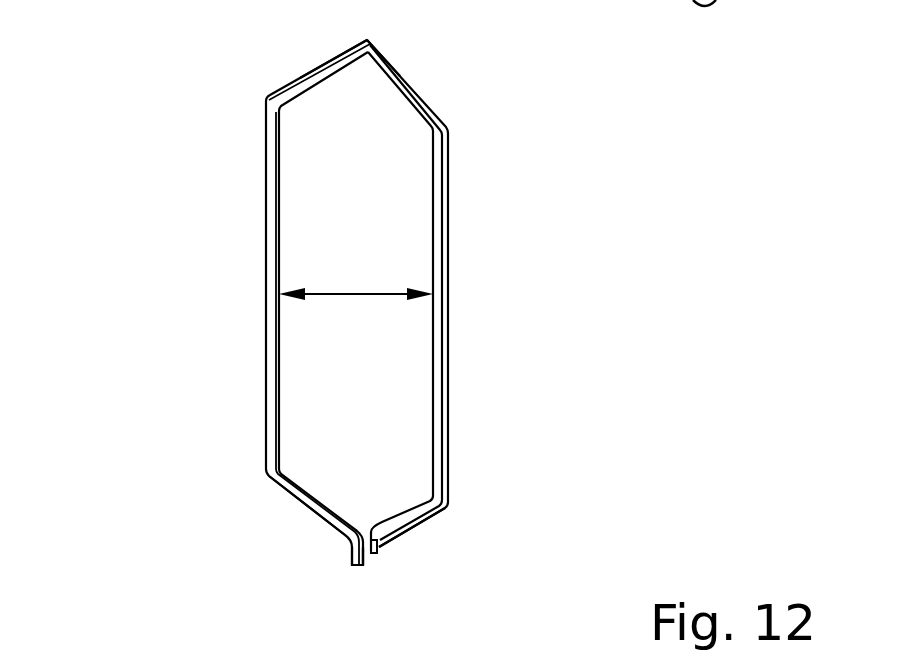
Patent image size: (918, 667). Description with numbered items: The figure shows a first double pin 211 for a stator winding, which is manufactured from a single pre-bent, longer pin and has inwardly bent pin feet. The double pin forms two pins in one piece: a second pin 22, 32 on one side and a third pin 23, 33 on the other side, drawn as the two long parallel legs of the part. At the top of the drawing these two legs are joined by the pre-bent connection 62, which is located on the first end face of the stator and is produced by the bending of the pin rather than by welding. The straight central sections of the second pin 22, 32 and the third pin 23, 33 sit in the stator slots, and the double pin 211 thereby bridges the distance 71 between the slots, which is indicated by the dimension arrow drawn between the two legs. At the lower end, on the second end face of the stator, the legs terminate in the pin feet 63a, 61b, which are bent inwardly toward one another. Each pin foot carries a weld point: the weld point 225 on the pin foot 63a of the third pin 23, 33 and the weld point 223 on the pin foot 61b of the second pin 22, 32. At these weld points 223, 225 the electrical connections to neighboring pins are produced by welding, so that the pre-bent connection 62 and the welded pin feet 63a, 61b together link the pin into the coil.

The first double pin 211 is at (256, 52).
The connection 62 is at (370, 45).
The third pin 23 is at (209, 302).
The third pin 33 is at (270, 263).
The second pin 22 is at (513, 296).
The second pin 32 is at (438, 258).
The distance between the slots 71 is at (360, 295).
The pin foot 63a is at (312, 511).
The pin foot 61b is at (418, 513).
The weld point 225 is at (353, 560).
The weld point 223 is at (372, 552).